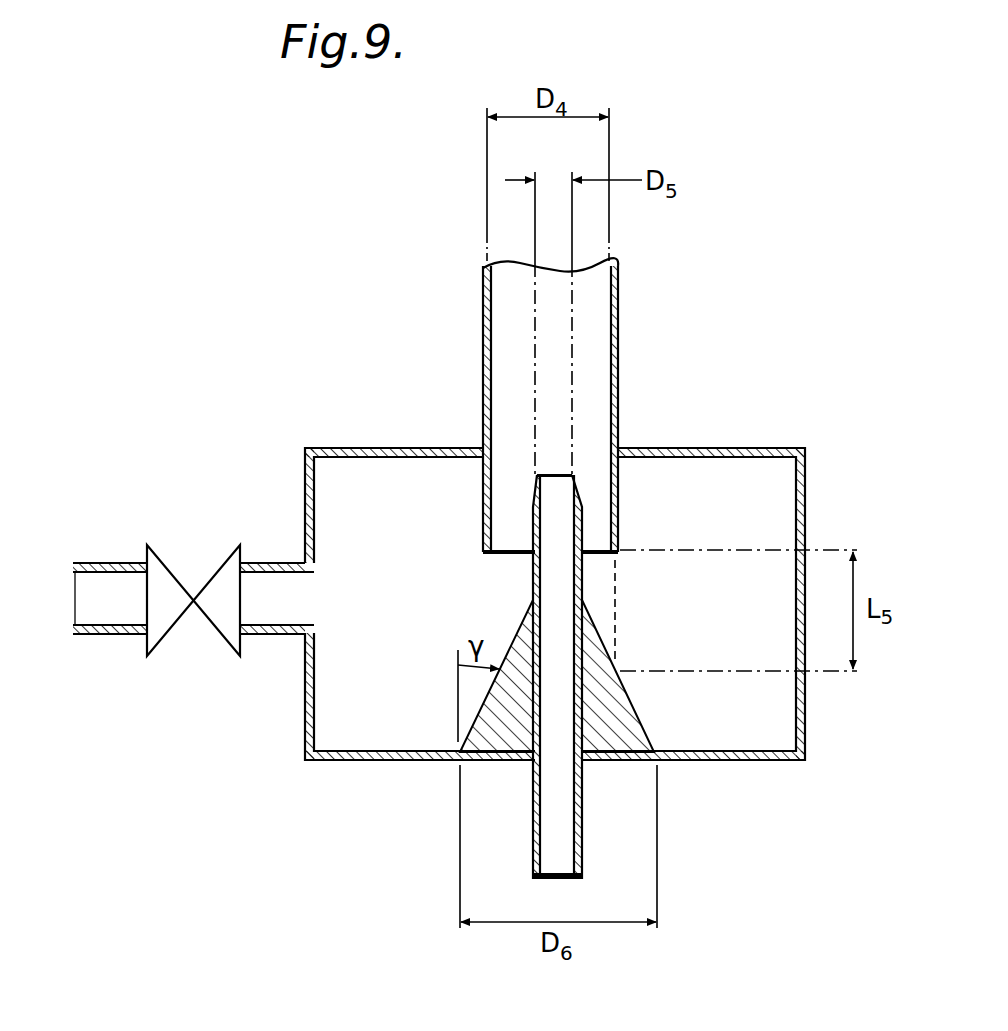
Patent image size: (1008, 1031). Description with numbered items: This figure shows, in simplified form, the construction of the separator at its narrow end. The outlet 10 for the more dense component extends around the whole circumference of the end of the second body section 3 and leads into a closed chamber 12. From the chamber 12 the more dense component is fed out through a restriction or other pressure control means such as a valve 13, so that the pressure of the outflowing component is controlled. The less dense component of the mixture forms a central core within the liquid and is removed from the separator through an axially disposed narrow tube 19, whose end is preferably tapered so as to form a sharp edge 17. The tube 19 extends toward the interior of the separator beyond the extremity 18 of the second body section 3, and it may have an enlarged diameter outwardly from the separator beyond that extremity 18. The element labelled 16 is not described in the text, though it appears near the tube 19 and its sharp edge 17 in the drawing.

The second body section 3 is at (618, 334).
The outlet 10 is at (600, 556).
The closed chamber 12 is at (773, 503).
The valve 13 is at (216, 572).
The nozzle tube 16 is at (582, 500).
The sharp edge 17 is at (573, 477).
The extremity 18 is at (483, 552).
The narrow tube 19 is at (533, 577).